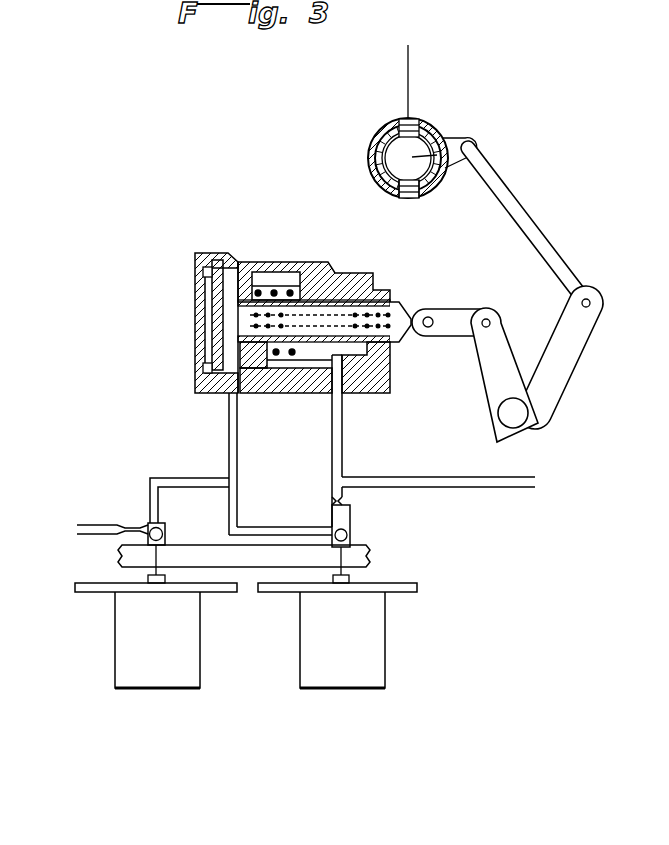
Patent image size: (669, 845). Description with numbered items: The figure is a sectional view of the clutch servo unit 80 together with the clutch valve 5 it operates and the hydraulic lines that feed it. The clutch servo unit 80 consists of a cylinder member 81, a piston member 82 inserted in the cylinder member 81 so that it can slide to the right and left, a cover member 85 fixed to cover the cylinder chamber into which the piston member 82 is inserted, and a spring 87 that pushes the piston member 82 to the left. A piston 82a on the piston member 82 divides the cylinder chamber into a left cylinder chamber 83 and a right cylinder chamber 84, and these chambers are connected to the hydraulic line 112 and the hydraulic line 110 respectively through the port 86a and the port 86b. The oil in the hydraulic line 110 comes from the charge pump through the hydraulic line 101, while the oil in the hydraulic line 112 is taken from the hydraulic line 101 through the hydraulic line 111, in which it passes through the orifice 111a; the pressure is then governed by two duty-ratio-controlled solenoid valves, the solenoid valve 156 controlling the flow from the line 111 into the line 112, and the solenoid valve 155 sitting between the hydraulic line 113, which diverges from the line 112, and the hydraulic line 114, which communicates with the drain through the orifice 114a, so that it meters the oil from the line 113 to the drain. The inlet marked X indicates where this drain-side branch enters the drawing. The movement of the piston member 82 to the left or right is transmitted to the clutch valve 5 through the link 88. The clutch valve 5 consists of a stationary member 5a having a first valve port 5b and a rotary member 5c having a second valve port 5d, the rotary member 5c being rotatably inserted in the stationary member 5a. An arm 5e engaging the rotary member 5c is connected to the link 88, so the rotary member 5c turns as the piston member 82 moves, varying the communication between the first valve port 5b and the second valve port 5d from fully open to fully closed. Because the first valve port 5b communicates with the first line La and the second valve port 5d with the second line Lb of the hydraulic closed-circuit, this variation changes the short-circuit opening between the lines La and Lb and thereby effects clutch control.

The clutch valve 5 is at (424, 156).
The stationary member 5a is at (370, 160).
The first valve port 5b is at (398, 117).
The rotary member 5c is at (385, 181).
The second valve port 5d is at (412, 197).
The arm 5e is at (471, 138).
The first line La is at (409, 70).
The second line Lb is at (449, 168).
The link 88 is at (579, 250).
The clutch servo unit 80 is at (279, 364).
The cylinder member 81 is at (292, 262).
The piston member 82 is at (344, 295).
The piston 82a is at (250, 262).
The left cylinder chamber 83 is at (220, 300).
The right cylinder chamber 84 is at (313, 268).
The cover member 85 is at (207, 286).
The port 86a is at (230, 397).
The port 86b is at (345, 396).
The spring 87 is at (266, 394).
The hydraulic line 101 is at (492, 490).
The hydraulic line 110 is at (343, 450).
The hydraulic line 111 is at (345, 513).
The orifice 111a is at (344, 500).
The hydraulic line 112 is at (248, 470).
The hydraulic line 113 is at (180, 477).
The hydraulic line 114 is at (92, 524).
The orifice 114a is at (122, 525).
The fluid inlet X is at (64, 533).
The solenoid valve 155 is at (170, 677).
The solenoid valve 156 is at (357, 677).